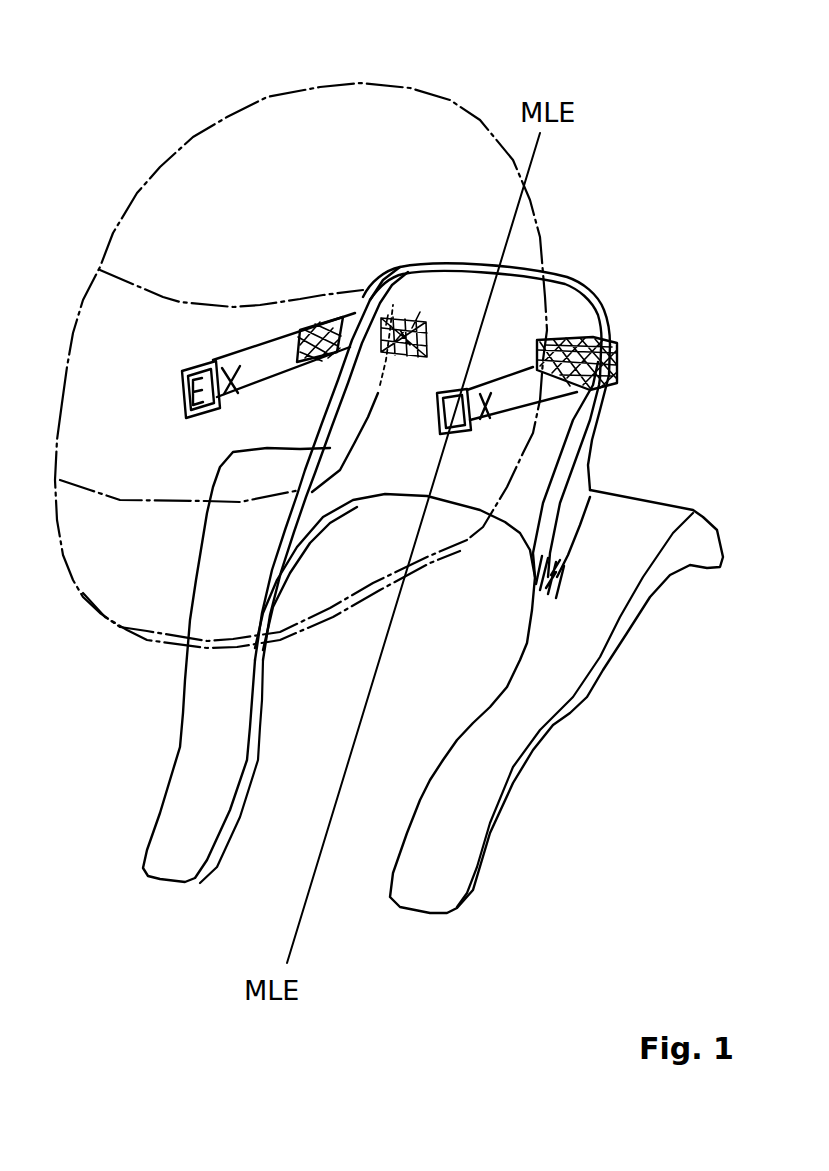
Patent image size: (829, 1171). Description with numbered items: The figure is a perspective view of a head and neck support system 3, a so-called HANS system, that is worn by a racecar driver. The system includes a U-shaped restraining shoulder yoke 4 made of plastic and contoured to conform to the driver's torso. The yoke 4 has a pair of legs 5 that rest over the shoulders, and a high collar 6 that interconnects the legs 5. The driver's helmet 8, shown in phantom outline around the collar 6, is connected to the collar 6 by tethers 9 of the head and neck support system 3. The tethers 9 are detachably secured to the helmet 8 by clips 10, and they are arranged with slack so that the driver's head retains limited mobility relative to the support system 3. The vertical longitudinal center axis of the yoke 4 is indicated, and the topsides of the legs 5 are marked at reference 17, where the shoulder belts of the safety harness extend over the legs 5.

The head and neck support system 3 is at (693, 271).
The restraining shoulder yoke 4 is at (641, 467).
The legs 5 is at (175, 771).
The collar 6 is at (576, 289).
The helmet 8 is at (423, 113).
The tethers 9 is at (278, 360).
The clips 10 is at (185, 400).
The contact surfaces of supports 17 is at (220, 683).